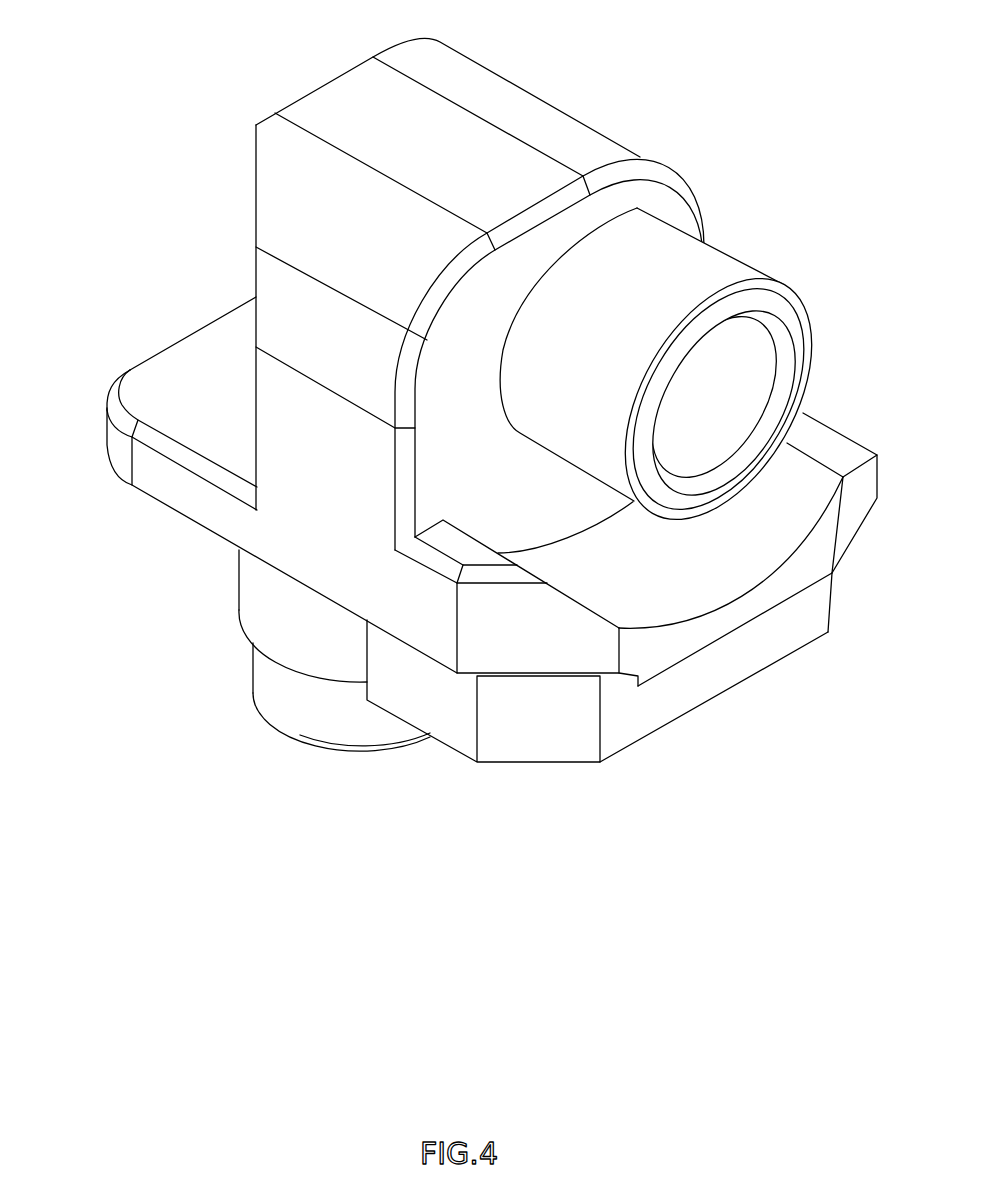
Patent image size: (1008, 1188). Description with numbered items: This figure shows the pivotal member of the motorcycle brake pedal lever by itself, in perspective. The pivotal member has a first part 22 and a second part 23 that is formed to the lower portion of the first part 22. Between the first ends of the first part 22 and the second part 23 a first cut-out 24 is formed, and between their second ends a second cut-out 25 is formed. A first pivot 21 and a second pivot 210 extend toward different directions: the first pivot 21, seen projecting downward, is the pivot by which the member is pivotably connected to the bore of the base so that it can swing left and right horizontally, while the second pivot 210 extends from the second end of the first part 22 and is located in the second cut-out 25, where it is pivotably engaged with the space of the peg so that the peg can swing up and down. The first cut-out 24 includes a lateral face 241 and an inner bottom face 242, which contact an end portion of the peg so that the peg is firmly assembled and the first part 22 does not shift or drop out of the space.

The first pivot 21 is at (285, 708).
The first part 22 is at (537, 108).
The second part 23 is at (212, 515).
The first cut-out 24 is at (151, 301).
The second cut-out 25 is at (678, 590).
The second pivot 210 is at (723, 265).
The lateral face 241 is at (255, 203).
The inner bottom face 242 is at (198, 432).